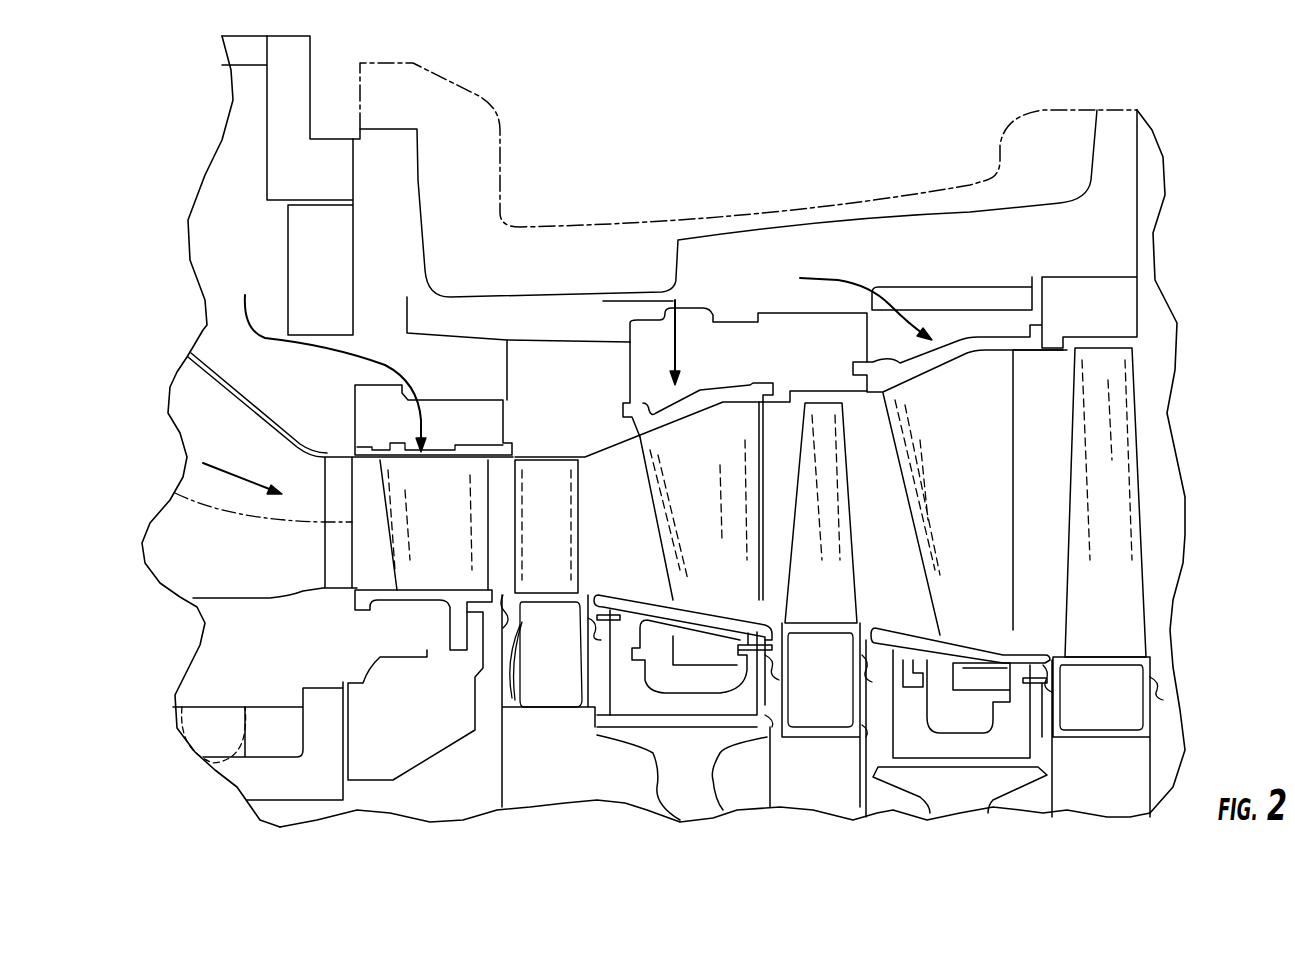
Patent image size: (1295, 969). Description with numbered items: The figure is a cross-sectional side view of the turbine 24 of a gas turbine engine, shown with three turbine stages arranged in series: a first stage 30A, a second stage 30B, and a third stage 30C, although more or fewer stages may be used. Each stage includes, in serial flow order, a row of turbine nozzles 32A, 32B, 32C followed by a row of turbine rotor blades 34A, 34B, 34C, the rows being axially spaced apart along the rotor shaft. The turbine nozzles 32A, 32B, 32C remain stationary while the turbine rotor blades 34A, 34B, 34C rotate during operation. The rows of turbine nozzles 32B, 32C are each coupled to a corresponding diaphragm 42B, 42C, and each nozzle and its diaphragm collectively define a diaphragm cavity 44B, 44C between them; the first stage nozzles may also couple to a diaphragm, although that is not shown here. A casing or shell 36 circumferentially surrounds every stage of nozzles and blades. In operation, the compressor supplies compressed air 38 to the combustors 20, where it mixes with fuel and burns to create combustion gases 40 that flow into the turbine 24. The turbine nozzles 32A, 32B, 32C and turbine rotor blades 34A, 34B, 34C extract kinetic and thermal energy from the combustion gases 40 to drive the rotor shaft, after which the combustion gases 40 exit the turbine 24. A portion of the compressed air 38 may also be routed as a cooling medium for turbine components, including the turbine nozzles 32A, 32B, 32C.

The combustor 20 is at (207, 348).
The turbine 24 is at (582, 138).
The casing or shell 36 is at (782, 253).
The compressed air 38 is at (245, 322).
The combustion gases 40 is at (222, 467).
The first stage 30A is at (470, 790).
The second stage 30B is at (752, 790).
The third stage 30C is at (1033, 802).
The turbine nozzle 32A is at (446, 507).
The turbine nozzle 32B is at (723, 477).
The turbine nozzle 32C is at (984, 499).
The turbine rotor blade 34A is at (566, 522).
The turbine rotor blade 34B is at (831, 552).
The turbine rotor blade 34C is at (1118, 602).
The diaphragm 42B is at (627, 695).
The diaphragm 42C is at (1017, 735).
The diaphragm cavity 44B is at (686, 680).
The diaphragm cavity 44C is at (957, 706).